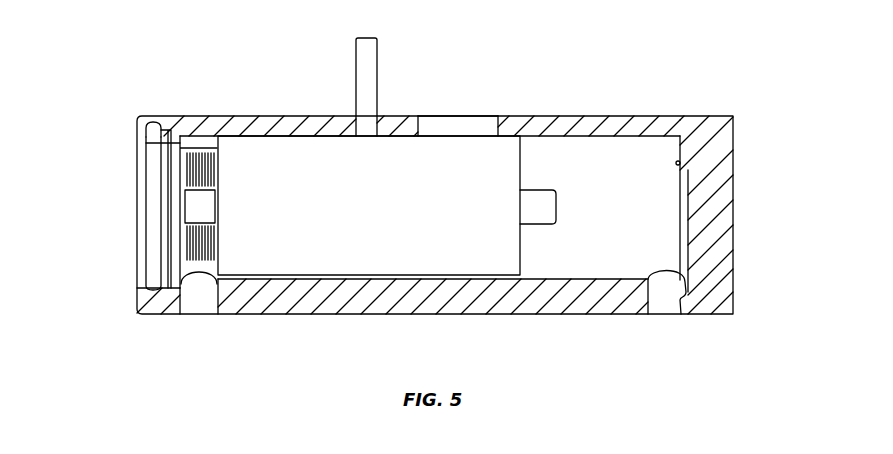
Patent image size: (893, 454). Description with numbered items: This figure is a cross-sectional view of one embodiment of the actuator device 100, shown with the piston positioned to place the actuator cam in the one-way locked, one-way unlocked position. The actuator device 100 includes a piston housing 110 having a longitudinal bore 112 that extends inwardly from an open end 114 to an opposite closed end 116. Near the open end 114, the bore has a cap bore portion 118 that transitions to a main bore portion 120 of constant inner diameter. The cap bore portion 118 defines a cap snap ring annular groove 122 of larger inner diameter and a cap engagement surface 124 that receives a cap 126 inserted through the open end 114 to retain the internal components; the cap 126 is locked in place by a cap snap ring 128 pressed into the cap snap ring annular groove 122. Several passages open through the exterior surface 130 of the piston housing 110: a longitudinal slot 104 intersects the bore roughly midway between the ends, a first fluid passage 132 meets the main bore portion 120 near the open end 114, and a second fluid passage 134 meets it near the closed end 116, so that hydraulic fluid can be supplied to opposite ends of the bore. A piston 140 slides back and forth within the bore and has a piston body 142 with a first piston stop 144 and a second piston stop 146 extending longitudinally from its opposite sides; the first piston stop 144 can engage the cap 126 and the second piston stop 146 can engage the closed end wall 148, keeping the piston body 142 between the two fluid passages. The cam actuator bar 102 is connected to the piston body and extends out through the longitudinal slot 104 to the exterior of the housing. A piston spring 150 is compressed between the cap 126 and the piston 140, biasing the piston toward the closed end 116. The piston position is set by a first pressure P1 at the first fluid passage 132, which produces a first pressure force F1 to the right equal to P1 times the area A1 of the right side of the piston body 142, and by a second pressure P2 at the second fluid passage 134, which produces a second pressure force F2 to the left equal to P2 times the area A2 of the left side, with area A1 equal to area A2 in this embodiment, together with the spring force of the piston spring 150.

The actuator device 100 is at (135, 57).
The cam actuator bar 102 is at (372, 57).
The longitudinal slot 104 is at (475, 125).
The piston housing 110 is at (690, 116).
The longitudinal bore 112 is at (588, 138).
The main bore portion 120 is at (589, 126).
The open end 114 is at (135, 122).
The closed end 116 is at (735, 277).
The cap bore portion 118 is at (142, 283).
The cap snap ring annular groove 122 is at (152, 125).
The cap engagement surface 124 is at (172, 128).
The cap 126 is at (177, 185).
The cap snap ring 128 is at (157, 235).
The exterior surface 130 is at (593, 316).
The first fluid passage 132 is at (186, 294).
The second fluid passage 134 is at (678, 302).
The piston 140 is at (420, 134).
The piston body 142 is at (370, 268).
The first piston stop 144 is at (208, 205).
The second piston stop 146 is at (538, 217).
The closed end wall 148 is at (690, 162).
The piston spring 150 is at (195, 140).
The cross-sectional area of the right side of the piston body A1 is at (180, 136).
The cross-sectional area of the left side of the piston body A2 is at (520, 160).
The first pressure force F1 is at (176, 202).
The second pressure force F2 is at (558, 204).
The first pressure P1 is at (202, 322).
The second pressure P2 is at (667, 322).